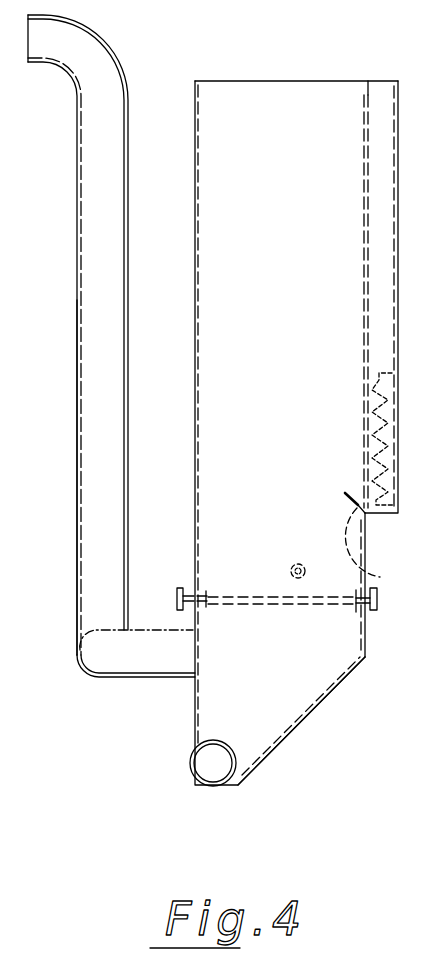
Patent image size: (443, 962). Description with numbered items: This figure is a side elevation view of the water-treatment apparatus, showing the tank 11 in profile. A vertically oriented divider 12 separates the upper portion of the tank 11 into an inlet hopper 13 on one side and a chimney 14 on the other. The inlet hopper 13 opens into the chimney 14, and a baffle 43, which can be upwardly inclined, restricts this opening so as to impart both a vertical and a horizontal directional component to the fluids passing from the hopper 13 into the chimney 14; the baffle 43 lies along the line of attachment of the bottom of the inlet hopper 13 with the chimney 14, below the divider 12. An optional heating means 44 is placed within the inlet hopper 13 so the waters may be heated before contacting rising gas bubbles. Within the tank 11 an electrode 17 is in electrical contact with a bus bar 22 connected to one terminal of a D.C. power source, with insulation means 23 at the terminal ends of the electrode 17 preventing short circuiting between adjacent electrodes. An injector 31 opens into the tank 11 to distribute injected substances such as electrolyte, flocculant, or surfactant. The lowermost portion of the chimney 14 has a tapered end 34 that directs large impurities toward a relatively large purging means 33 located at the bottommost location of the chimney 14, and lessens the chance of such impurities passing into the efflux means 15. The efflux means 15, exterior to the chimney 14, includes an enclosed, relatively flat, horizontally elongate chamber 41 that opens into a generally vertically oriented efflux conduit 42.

The tank 11 is at (183, 317).
The divider 12 is at (365, 130).
The inlet hopper 13 is at (378, 82).
The chimney 14 is at (268, 80).
The effluent efflux means 15 is at (68, 518).
The electrode 17 is at (321, 606).
The bus bar 22 is at (377, 606).
The insulation means 23 is at (178, 588).
The injector 31 is at (290, 566).
The purging means 33 is at (243, 765).
The tapered end 34 is at (285, 738).
The chamber 41 is at (128, 678).
The efflux conduit 42 is at (78, 290).
The baffle 43 is at (360, 552).
The heating means 44 is at (385, 515).